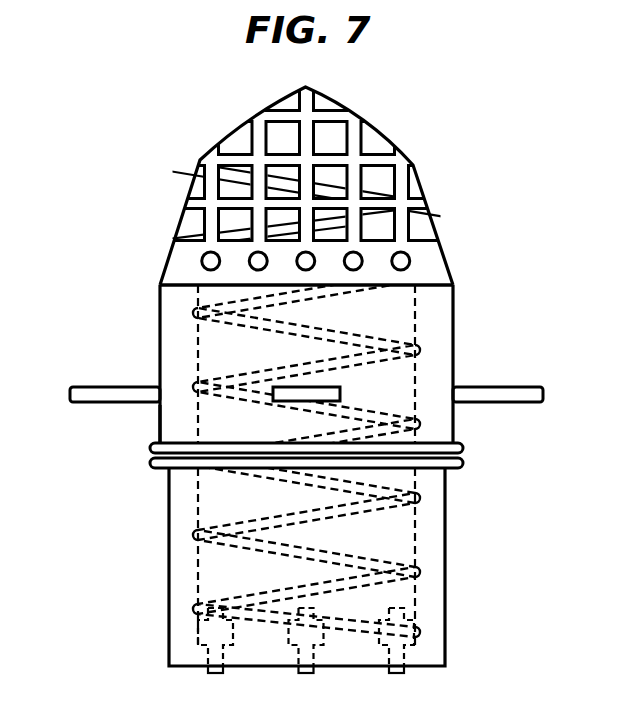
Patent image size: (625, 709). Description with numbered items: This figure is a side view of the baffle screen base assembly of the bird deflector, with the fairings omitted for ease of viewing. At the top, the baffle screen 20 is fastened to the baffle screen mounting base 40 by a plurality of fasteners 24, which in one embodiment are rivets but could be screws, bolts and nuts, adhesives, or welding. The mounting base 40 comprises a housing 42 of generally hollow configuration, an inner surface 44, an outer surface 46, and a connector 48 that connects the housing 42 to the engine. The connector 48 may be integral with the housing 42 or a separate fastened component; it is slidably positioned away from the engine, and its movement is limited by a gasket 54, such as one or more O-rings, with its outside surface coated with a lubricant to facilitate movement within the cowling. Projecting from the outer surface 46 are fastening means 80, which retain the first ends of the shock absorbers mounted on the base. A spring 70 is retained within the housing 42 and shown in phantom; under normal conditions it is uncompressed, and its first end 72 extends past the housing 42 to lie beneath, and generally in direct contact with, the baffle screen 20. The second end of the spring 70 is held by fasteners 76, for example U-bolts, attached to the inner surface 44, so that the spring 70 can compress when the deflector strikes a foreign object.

The baffle screen 20 is at (435, 266).
The first end of spring 72 is at (380, 170).
The fasteners 24 is at (202, 262).
The baffle screen mounting base 40 is at (435, 433).
The housing 42 is at (173, 320).
The outer surface 46 is at (158, 366).
The inner surface 44 is at (164, 420).
The spring 70 is at (343, 342).
The gasket 54 is at (452, 460).
The connector 48 is at (445, 560).
The fastening means 80 is at (70, 394).
The fasteners 76 is at (200, 634).